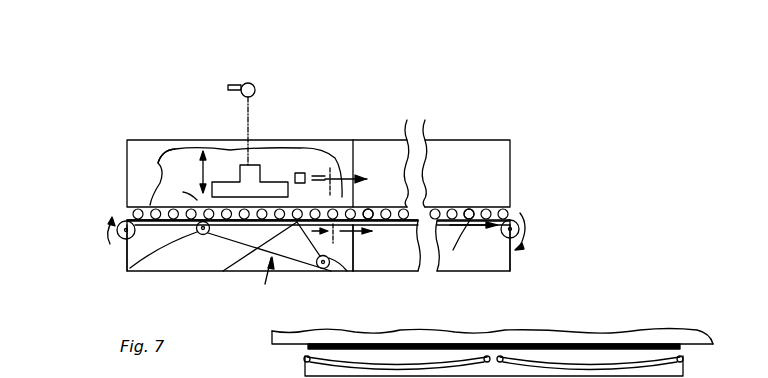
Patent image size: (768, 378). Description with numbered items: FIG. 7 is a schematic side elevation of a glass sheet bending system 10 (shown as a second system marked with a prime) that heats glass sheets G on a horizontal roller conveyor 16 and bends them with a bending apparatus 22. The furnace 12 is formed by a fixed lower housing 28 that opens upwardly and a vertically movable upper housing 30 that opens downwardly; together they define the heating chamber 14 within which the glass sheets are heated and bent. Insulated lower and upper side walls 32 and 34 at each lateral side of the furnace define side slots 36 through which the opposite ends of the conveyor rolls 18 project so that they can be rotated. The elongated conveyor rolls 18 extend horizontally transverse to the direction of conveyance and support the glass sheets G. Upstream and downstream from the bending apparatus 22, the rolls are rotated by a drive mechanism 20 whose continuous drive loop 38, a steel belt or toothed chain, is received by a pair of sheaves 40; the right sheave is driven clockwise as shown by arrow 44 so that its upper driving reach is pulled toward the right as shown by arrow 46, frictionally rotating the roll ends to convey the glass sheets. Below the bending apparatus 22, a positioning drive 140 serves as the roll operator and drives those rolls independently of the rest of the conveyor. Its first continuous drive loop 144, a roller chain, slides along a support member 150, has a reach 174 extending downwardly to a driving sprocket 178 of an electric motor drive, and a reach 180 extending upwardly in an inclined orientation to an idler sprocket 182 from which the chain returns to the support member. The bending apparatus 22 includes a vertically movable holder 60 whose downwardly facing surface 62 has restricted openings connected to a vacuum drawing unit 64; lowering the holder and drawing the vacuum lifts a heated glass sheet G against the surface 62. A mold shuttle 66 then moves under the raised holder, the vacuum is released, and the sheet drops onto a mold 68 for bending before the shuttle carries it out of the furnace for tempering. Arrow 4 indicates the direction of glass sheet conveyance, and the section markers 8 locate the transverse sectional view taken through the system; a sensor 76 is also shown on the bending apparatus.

The section line 8- 8 is at (100, 118).
The glass sheet bending system 10 is at (344, 85).
The furnace 12 is at (400, 129).
The heating chamber 14 is at (266, 150).
The horizontal roller conveyor 16 is at (499, 200).
The conveyor rolls 18 is at (167, 210).
The drive mechanism 20 is at (536, 220).
The bending apparatus 22 is at (233, 152).
The lower housing 28 is at (395, 263).
The upper housing 30 is at (512, 153).
The lower side wall 32 is at (513, 250).
The upper side wall 34 is at (513, 197).
The side slots 36 is at (367, 210).
The continuous drive loop 38 is at (462, 210).
The sheaves 40 is at (118, 238).
The arrow 44 is at (114, 238).
The arrow 46 is at (468, 237).
The holder 60 is at (217, 147).
The downwardly facing surface 62 is at (148, 203).
The vacuum drawing unit 64 is at (253, 85).
The mold shuttle 66 is at (300, 370).
The mold 68 is at (305, 358).
The sensor 76 is at (308, 172).
The direction arrow 4 is at (348, 181).
The positioning drive 140 is at (283, 279).
The first continuous drive loop 144 is at (248, 247).
The support member 150 is at (200, 234).
The reach 174 is at (360, 272).
The driving sprocket 178 is at (322, 270).
The reach 180 is at (227, 273).
The idler sprocket 182 is at (128, 273).
The glass sheet G is at (423, 347).